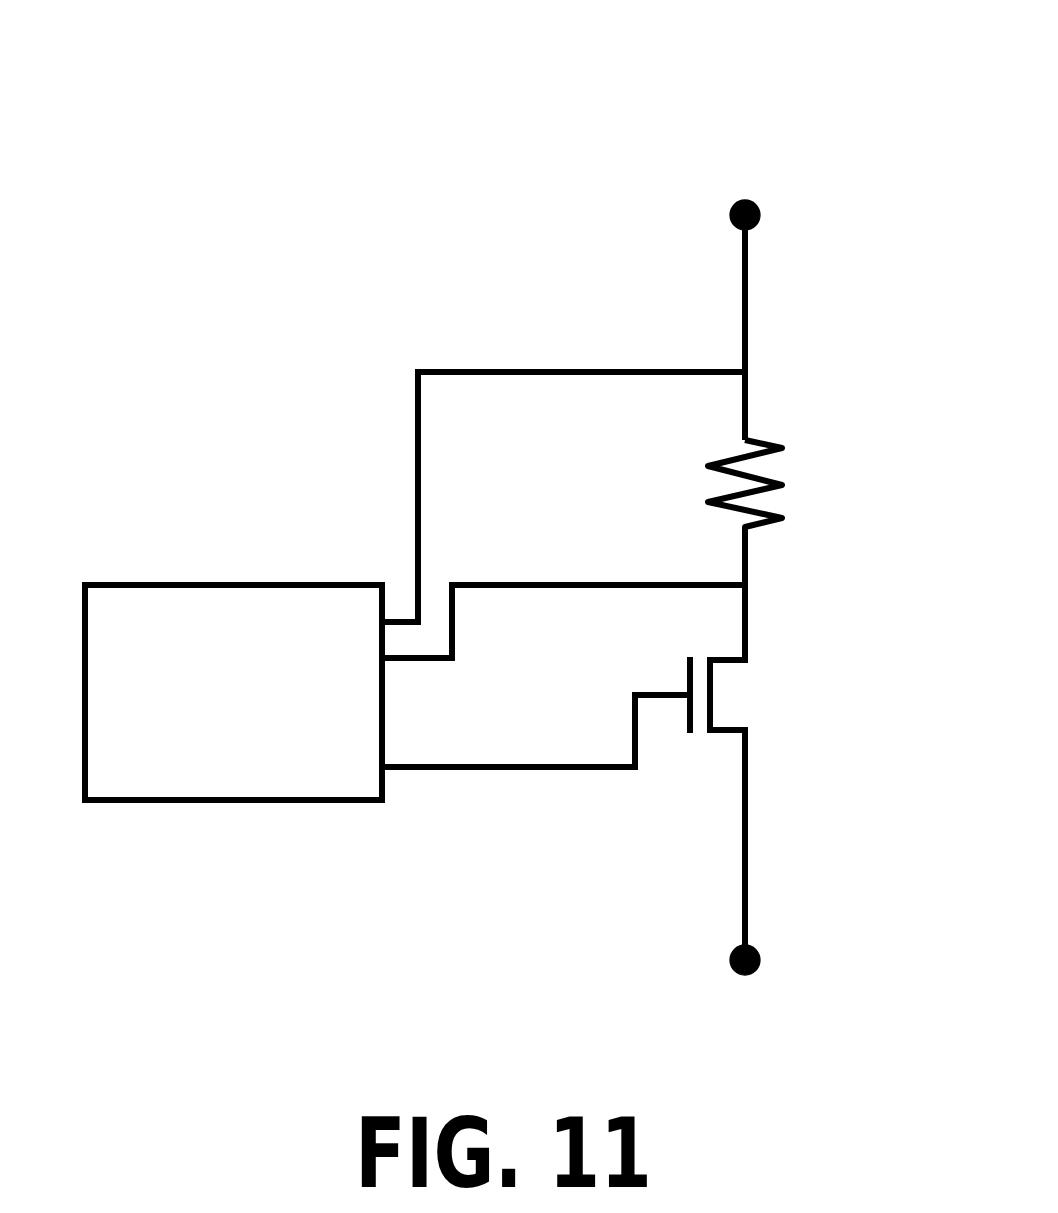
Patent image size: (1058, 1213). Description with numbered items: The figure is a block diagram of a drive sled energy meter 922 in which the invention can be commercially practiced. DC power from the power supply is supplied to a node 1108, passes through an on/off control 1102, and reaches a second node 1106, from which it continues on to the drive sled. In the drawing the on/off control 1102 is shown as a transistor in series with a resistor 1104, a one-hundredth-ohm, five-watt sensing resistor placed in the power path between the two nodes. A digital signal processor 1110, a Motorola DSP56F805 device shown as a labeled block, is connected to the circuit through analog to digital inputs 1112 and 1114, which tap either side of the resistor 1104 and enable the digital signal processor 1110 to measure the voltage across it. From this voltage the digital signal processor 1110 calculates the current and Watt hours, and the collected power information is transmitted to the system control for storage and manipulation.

The drive sled energy meter 922 is at (600, 120).
The on/off control 1102 is at (767, 703).
The resistor 1104 is at (757, 440).
The second node 1106 is at (762, 217).
The node 1108 is at (762, 960).
The digital signal processor 1110 is at (287, 802).
The analog to digital input 1112 is at (573, 368).
The analog to digital input 1114 is at (645, 582).